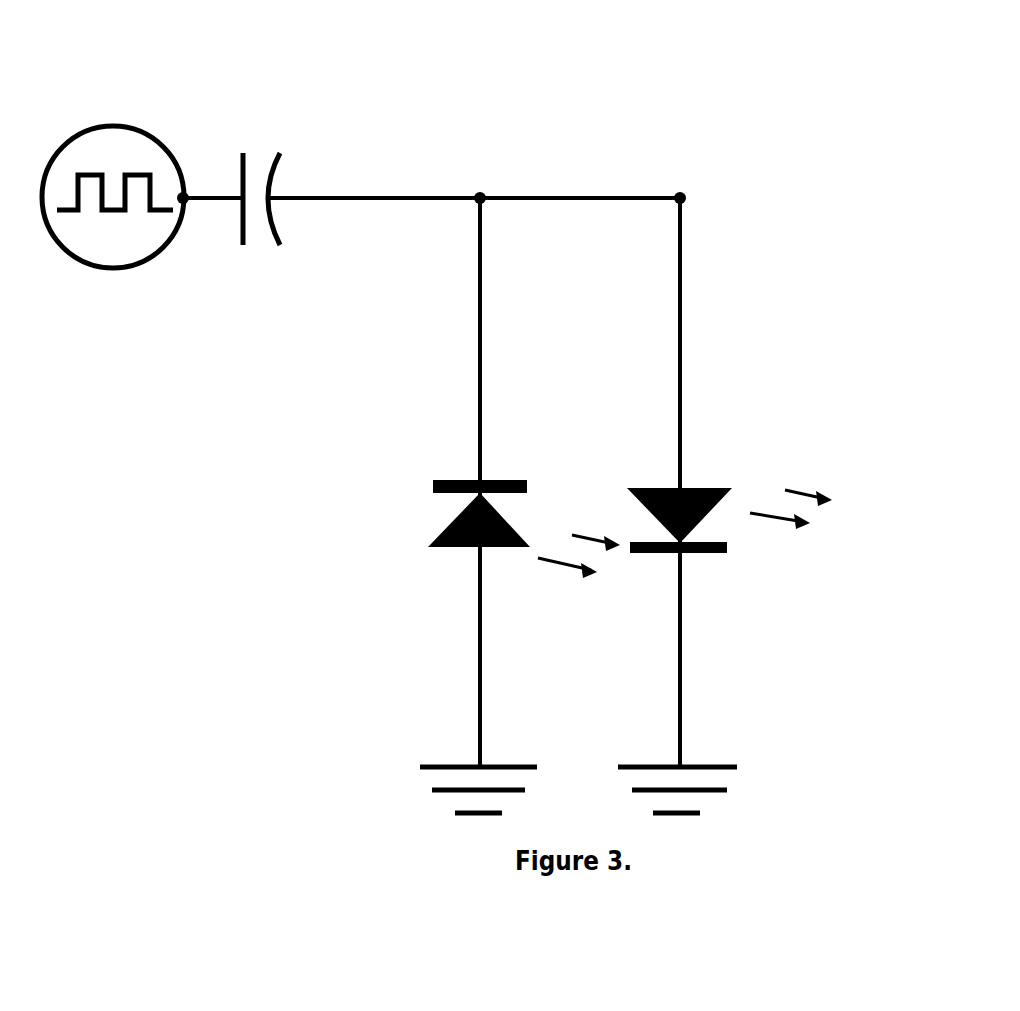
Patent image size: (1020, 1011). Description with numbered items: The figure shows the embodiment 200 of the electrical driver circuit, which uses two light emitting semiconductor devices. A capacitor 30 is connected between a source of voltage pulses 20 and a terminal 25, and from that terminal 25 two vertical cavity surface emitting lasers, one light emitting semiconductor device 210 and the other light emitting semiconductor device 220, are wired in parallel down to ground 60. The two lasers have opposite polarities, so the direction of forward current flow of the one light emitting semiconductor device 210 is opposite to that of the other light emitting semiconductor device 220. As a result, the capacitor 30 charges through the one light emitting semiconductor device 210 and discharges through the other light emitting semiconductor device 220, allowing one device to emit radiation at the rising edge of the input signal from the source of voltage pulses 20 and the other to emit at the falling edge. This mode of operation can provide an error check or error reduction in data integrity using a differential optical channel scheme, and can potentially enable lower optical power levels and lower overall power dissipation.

The source of voltage pulses 20 is at (118, 108).
The capacitor 30 is at (270, 127).
The terminal 25 is at (478, 183).
The embodiment of the driver circuit 200 is at (489, 482).
The other light emitting semiconductor device 220 is at (460, 463).
The one light emitting semiconductor device 210 is at (720, 463).
The ground 60 is at (420, 815).